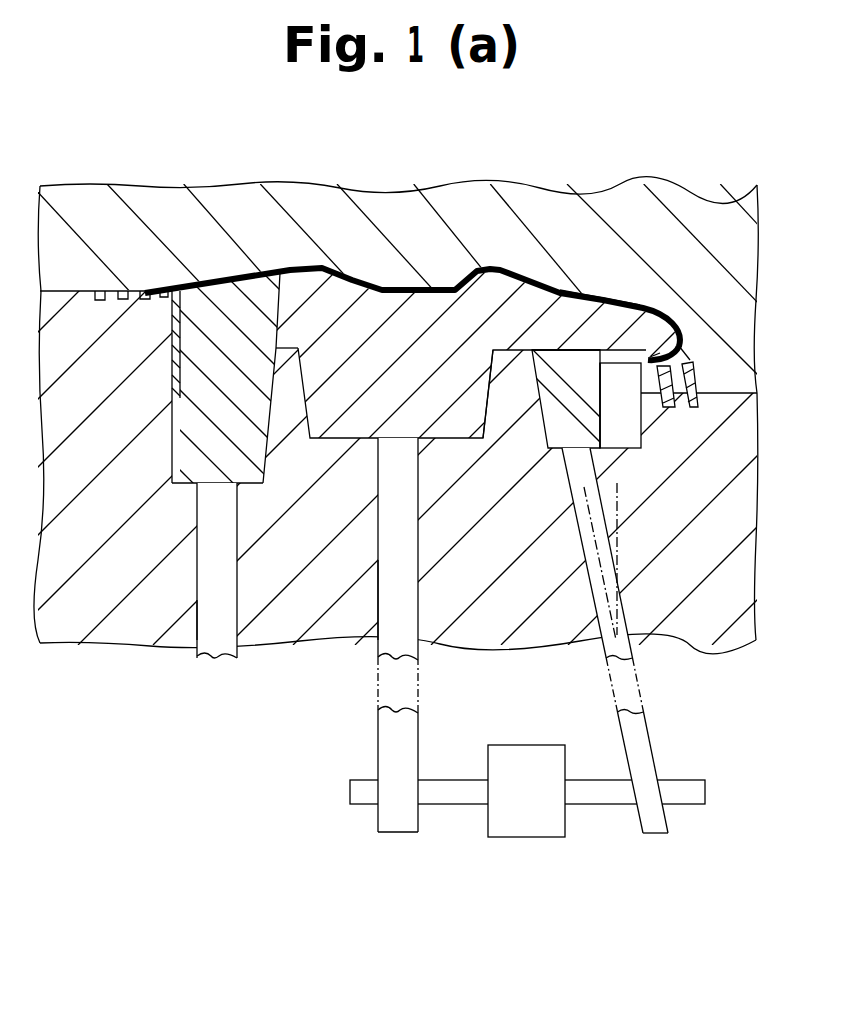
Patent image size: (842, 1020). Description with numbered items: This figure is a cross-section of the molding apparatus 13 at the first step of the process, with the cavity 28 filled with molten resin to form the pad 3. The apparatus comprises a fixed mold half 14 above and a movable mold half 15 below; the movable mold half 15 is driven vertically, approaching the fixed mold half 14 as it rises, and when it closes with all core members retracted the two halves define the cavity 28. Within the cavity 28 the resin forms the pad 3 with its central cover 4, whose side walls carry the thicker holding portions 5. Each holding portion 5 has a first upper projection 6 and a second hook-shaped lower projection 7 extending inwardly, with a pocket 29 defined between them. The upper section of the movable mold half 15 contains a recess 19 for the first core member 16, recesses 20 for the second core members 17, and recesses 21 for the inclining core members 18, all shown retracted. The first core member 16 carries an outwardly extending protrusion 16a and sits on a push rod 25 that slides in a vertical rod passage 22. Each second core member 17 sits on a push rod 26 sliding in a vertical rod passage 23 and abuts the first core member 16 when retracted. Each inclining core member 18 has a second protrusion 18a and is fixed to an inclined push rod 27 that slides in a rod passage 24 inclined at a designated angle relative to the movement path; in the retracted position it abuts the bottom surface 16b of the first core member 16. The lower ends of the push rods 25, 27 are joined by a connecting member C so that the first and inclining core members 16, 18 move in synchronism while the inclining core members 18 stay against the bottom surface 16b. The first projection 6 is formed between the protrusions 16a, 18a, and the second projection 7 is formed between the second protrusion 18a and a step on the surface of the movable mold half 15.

The pad 3 is at (429, 305).
The cover 4 is at (688, 322).
The holding portion 5 is at (693, 335).
The first upper projection 6 is at (642, 333).
The second hook-shaped lower projection 7 is at (620, 405).
The molding apparatus 13 is at (550, 171).
The fixed mold half 14 is at (746, 259).
The movable mold half 15 is at (745, 503).
The first core member 16 is at (440, 428).
The protrusion 16a is at (640, 304).
The bottom surface 16b is at (498, 355).
The second core member 17 is at (260, 457).
The inclining core member 18 is at (555, 420).
The second protrusion 18a is at (612, 346).
The recess 19 is at (350, 435).
The recess 20 is at (172, 450).
The recess 21 is at (600, 433).
The rod passage 22 is at (420, 622).
The rod passage 23 is at (230, 630).
The rod passage 24 is at (582, 509).
The push rod 25 is at (381, 608).
The push rod 26 is at (202, 618).
The inclined push rod 27 is at (590, 581).
The cavity 28 is at (380, 283).
The pocket 29 is at (693, 351).
The connecting member C is at (530, 750).